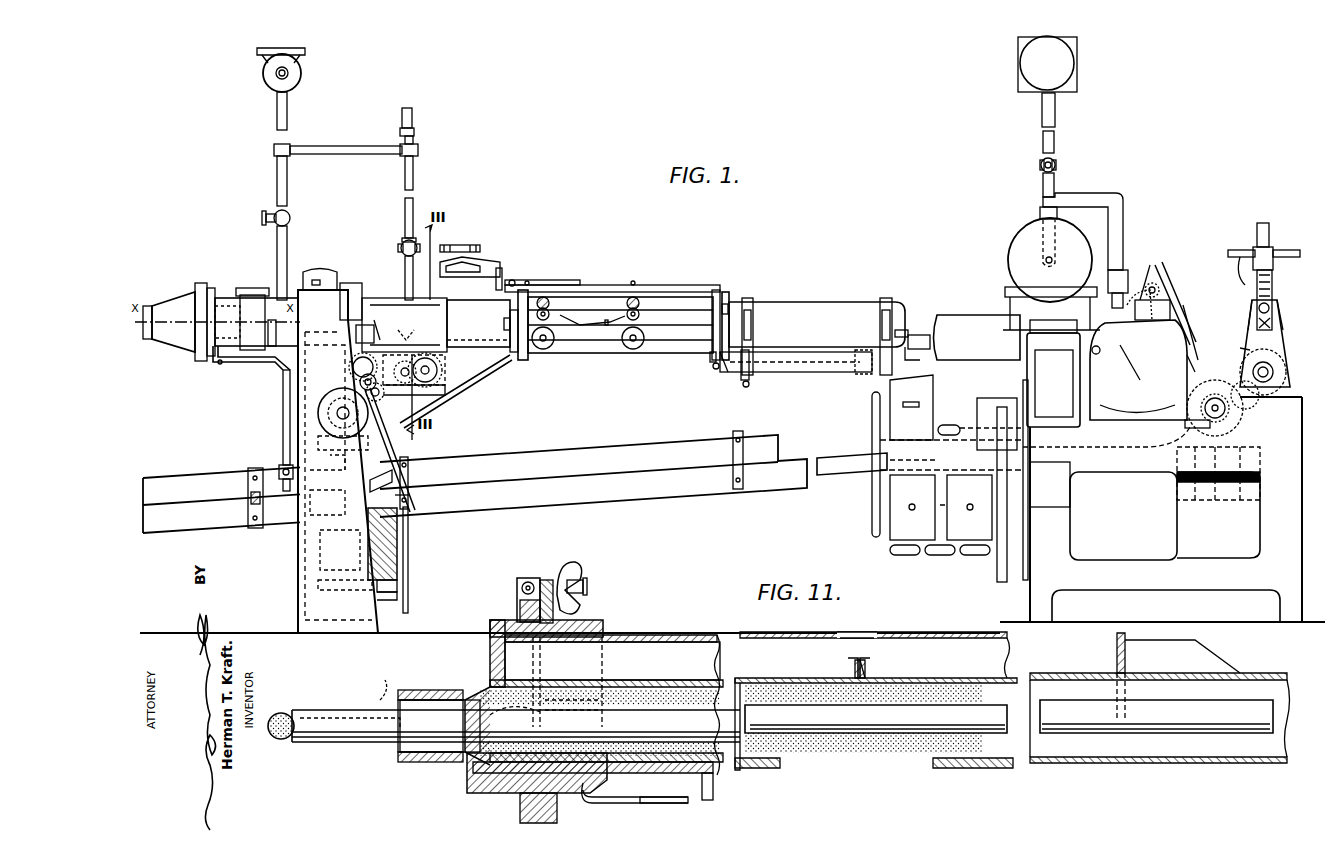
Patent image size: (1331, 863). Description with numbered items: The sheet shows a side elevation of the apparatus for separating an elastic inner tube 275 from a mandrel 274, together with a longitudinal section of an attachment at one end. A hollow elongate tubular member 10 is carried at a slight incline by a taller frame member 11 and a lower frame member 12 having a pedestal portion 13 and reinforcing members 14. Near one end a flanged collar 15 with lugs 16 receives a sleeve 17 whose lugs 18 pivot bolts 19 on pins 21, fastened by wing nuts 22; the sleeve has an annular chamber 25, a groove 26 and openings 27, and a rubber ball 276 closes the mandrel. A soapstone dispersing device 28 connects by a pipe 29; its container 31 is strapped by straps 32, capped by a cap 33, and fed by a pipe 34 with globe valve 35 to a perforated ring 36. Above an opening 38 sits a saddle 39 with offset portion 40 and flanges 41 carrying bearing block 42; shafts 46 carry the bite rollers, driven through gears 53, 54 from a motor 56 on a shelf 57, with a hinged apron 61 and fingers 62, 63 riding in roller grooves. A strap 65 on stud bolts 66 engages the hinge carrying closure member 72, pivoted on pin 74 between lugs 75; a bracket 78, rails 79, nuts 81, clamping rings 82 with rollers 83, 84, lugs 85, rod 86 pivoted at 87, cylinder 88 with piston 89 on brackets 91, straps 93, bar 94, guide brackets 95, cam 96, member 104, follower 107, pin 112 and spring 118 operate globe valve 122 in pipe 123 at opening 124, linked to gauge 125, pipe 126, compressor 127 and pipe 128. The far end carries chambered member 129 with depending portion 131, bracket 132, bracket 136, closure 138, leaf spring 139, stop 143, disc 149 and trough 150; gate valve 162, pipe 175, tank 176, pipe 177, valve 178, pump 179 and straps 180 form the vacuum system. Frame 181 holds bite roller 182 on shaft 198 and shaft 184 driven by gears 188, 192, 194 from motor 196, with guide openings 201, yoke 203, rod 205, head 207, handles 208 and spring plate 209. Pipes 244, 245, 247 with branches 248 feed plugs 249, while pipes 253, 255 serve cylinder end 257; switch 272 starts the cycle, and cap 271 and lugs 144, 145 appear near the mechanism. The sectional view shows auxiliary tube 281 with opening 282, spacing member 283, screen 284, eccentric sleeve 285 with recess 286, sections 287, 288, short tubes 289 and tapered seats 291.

In FIG. 1, the hollow elongate tubular member 10 is at (800, 302).
In FIG. 11, the hollow elongate tubular member 10 is at (650, 635).
In FIG. 1, the frame member 11 is at (298, 555).
In FIG. 1, the frame member 12 is at (1070, 540).
In FIG. 1, the vertical pedestal-like portion 13 is at (1302, 500).
In FIG. 1, the horizontal reinforcing members 14 is at (1125, 472).
In FIG. 1, the flanged collar 15 is at (210, 296).
In FIG. 11, the flanged collar 15 is at (600, 620).
In FIG. 11, the spaced lugs 16 is at (547, 580).
In FIG. 1, the sleeve 17 is at (170, 300).
In FIG. 11, the spaced lugs 18 is at (517, 598).
In FIG. 11, the bolts 19 is at (587, 584).
In FIG. 11, the pins 21 is at (528, 582).
In FIG. 1, the wing nuts 22 is at (203, 283).
In FIG. 11, the wing nuts 22 is at (575, 565).
In FIG. 11, the annular chamber 25 is at (425, 690).
In FIG. 1, the groove 26 is at (152, 308).
In FIG. 11, the groove 26 is at (390, 720).
In FIG. 11, the spaced openings 27 is at (366, 691).
In FIG. 1, the soapstone dispersing device 28 is at (397, 545).
In FIG. 1, the pipe 29 is at (283, 420).
In FIG. 11, the pipe 29 is at (713, 790).
In FIG. 1, the container 31 is at (397, 596).
In FIG. 1, the straps 32 is at (410, 497).
In FIG. 1, the cap 33 is at (408, 470).
In FIG. 1, the pipe 34 is at (300, 500).
In FIG. 1, the globe valve 35 is at (279, 468).
In FIG. 1, the perforated annular ring 36 is at (340, 580).
In FIG. 11, the rectangular opening 38 is at (950, 768).
In FIG. 1, the inverted U-shape saddle 39 is at (395, 298).
In FIG. 1, the offset portion 40 is at (350, 283).
In FIG. 1, the horizontally disposed flanges 41 is at (405, 338).
In FIG. 1, the bearing block 42 is at (445, 362).
In FIG. 1, the shafts 46 is at (418, 385).
In FIG. 1, the reduction gear 53 is at (360, 380).
In FIG. 1, the reduction gear 54 is at (352, 362).
In FIG. 1, the motor 56 is at (322, 400).
In FIG. 1, the shelf 57 is at (375, 470).
In FIG. 1, the hinged apron 61 is at (408, 562).
In FIG. 1, the pointed finger-like portion 62 is at (384, 395).
In FIG. 1, the finger 63 is at (440, 405).
In FIG. 1, the elongate strap 65 is at (384, 323).
In FIG. 1, the stud bolts 66 is at (363, 332).
In FIG. 1, the arcuate closure member 72 is at (468, 330).
In FIG. 1, the pin 74 is at (514, 352).
In FIG. 1, the spaced lugs 75 is at (523, 360).
In FIG. 1, the second U-shape bracket 78 is at (727, 292).
In FIG. 1, the rails 79 is at (675, 330).
In FIG. 1, the nuts 81 is at (505, 312).
In FIG. 1, the clamping rings 82 is at (550, 305).
In FIG. 1, the rollers 83 is at (548, 348).
In FIG. 1, the rollers 84 is at (592, 329).
In FIG. 1, the lugs 85 is at (711, 374).
In FIG. 1, the rod 86 is at (726, 372).
In FIG. 1, the pivot 87 is at (705, 360).
In FIG. 1, the cylinder 88 is at (820, 372).
In FIG. 1, the piston 89 is at (862, 374).
In FIG. 1, the clamping brackets 91 is at (753, 330).
In FIG. 1, the straps 93 is at (505, 290).
In FIG. 1, the elongate bar 94 is at (633, 283).
In FIG. 1, the guide brackets 95 is at (542, 272).
In FIG. 1, the cam 96 is at (535, 272).
In FIG. 1, the member 104 is at (482, 260).
In FIG. 1, the follower 107 is at (514, 280).
In FIG. 1, the pin 112 is at (499, 270).
In FIG. 1, the spring 118 is at (455, 245).
In FIG. 1, the globe valve 122 is at (400, 250).
In FIG. 1, the pipe 123 is at (413, 205).
In FIG. 11, the opening 124 is at (857, 632).
In FIG. 1, the pressure gauge 125 is at (412, 118).
In FIG. 1, the pipe 126 is at (287, 107).
In FIG. 1, the compressor 127 is at (301, 73).
In FIG. 1, the pipe 128 is at (346, 146).
In FIG. 1, the chambered member 129 is at (1040, 330).
In FIG. 1, the depending portion 131 is at (1113, 376).
In FIG. 1, the bracket 132 is at (1140, 290).
In FIG. 1, the bracket 136 is at (1170, 280).
In FIG. 1, the closure member 138 is at (1206, 360).
In FIG. 1, the leaf spring 139 is at (1190, 325).
In FIG. 1, the rubber stop 143 is at (1161, 274).
In FIG. 1, the ratchet 144 is at (1160, 290).
In FIG. 1, the pawl 145 is at (1170, 305).
In FIG. 1, the disc 149 is at (1106, 437).
In FIG. 1, the trough 150 is at (200, 525).
In FIG. 1, the pneumatic gate valve 162 is at (1108, 280).
In FIG. 1, the pipe 175 is at (1085, 193).
In FIG. 1, the steel capacity tank 176 is at (1020, 232).
In FIG. 1, the pipe 177 is at (1030, 145).
In FIG. 1, the valve 178 is at (1055, 162).
In FIG. 1, the vacuum pump 179 is at (1075, 63).
In FIG. 1, the straps 180 is at (1010, 288).
In FIG. 1, the frame 181 is at (1290, 376).
In FIG. 1, the bite roller 182 is at (1228, 339).
In FIG. 1, the shaft 184 is at (1273, 370).
In FIG. 1, the gear 188 is at (1252, 400).
In FIG. 1, the gear 192 is at (1190, 390).
In FIG. 1, the gear 194 is at (1196, 423).
In FIG. 1, the motor 196 is at (1180, 388).
In FIG. 1, the shaft 198 is at (1272, 308).
In FIG. 1, the guide openings 201 is at (1290, 330).
In FIG. 1, the yoke 203 is at (1273, 262).
In FIG. 1, the vertically disposed rod 205 is at (1269, 228).
In FIG. 1, the head 207 is at (1240, 250).
In FIG. 1, the handles 208 is at (1290, 250).
In FIG. 1, the curved spring plate 209 is at (1238, 268).
In FIG. 1, the pipe 244 is at (287, 243).
In FIG. 1, the valve 245 is at (290, 216).
In FIG. 1, the pipe 247 is at (274, 333).
In FIG. 11, the pipe 247 is at (672, 803).
In FIG. 1, the bifurcated sections 248 is at (218, 357).
In FIG. 11, the bifurcated sections 248 is at (600, 803).
In FIG. 11, the hollow plugs 249 is at (610, 690).
In FIG. 1, the pipe 253 is at (749, 380).
In FIG. 1, the pipe 255 is at (930, 345).
In FIG. 1, the end of cylinder 257 is at (751, 392).
In FIG. 1, the cap 271 is at (320, 268).
In FIG. 1, the switch 272 is at (253, 288).
In FIG. 11, the mandrel 274 is at (335, 744).
In FIG. 11, the elastic inner tube 275 is at (400, 696).
In FIG. 11, the rubber ball 276 is at (280, 740).
In FIG. 11, the auxiliary tubular member 281 is at (945, 678).
In FIG. 11, the opening 282 is at (935, 768).
In FIG. 11, the spacing member 283 is at (848, 660).
In FIG. 11, the screen 284 is at (870, 665).
In FIG. 11, the eccentric sleeve 285 is at (490, 650).
In FIG. 11, the annular recess 286 is at (611, 661).
In FIG. 11, the concentric section 287 is at (468, 698).
In FIG. 11, the concentric section 288 is at (439, 726).
In FIG. 11, the short tubes 289 is at (480, 780).
In FIG. 11, the tapered seats 291 is at (545, 700).